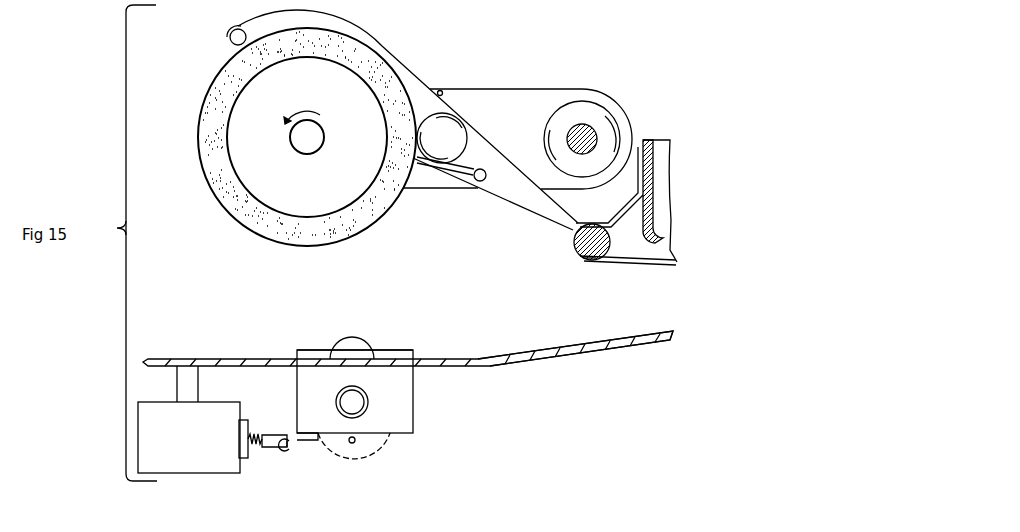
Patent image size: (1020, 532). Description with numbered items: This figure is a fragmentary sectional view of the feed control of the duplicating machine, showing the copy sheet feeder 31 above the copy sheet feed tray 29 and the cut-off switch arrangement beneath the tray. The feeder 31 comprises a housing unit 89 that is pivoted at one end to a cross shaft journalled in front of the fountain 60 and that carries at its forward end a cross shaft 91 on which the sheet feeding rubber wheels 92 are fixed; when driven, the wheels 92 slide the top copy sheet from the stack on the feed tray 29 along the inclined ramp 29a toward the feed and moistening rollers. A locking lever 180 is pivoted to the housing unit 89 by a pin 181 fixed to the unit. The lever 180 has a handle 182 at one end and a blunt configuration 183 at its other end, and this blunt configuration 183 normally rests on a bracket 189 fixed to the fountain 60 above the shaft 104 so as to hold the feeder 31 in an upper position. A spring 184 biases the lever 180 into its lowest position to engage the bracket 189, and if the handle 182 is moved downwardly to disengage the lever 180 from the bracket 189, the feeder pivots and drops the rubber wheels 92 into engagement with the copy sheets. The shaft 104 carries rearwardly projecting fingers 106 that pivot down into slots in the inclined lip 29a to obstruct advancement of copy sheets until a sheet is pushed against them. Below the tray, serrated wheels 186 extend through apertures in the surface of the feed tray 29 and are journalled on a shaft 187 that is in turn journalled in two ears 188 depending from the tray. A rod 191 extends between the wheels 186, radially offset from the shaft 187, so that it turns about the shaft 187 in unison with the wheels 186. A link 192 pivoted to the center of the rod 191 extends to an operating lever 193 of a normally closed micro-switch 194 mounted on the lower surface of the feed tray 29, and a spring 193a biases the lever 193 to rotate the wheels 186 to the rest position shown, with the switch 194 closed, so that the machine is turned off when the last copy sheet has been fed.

The copy sheet feeder 31 is at (203, 110).
The sheet feeding rubber wheels 92 is at (205, 137).
The cross shaft 91 is at (316, 132).
The handle 182 is at (243, 30).
The locking lever 180 is at (536, 199).
The housing unit 89 is at (520, 107).
The pin 181 is at (454, 146).
The spring 184 is at (480, 169).
The bracket 189 is at (625, 210).
The blunt configuration 183 is at (577, 231).
The shaft 104 is at (590, 258).
The fingers 106 is at (668, 262).
The fountain 60 is at (660, 146).
The copy sheet feed tray 29 is at (219, 352).
The inclined ramp 29a is at (560, 352).
The micro-switch 194 is at (200, 450).
The spring 193a is at (246, 458).
The operating lever 193 is at (270, 450).
The link 192 is at (313, 445).
The ears 188 is at (400, 430).
The shaft 187 is at (368, 402).
The rod 191 is at (352, 446).
The serrated wheels 186 is at (376, 442).